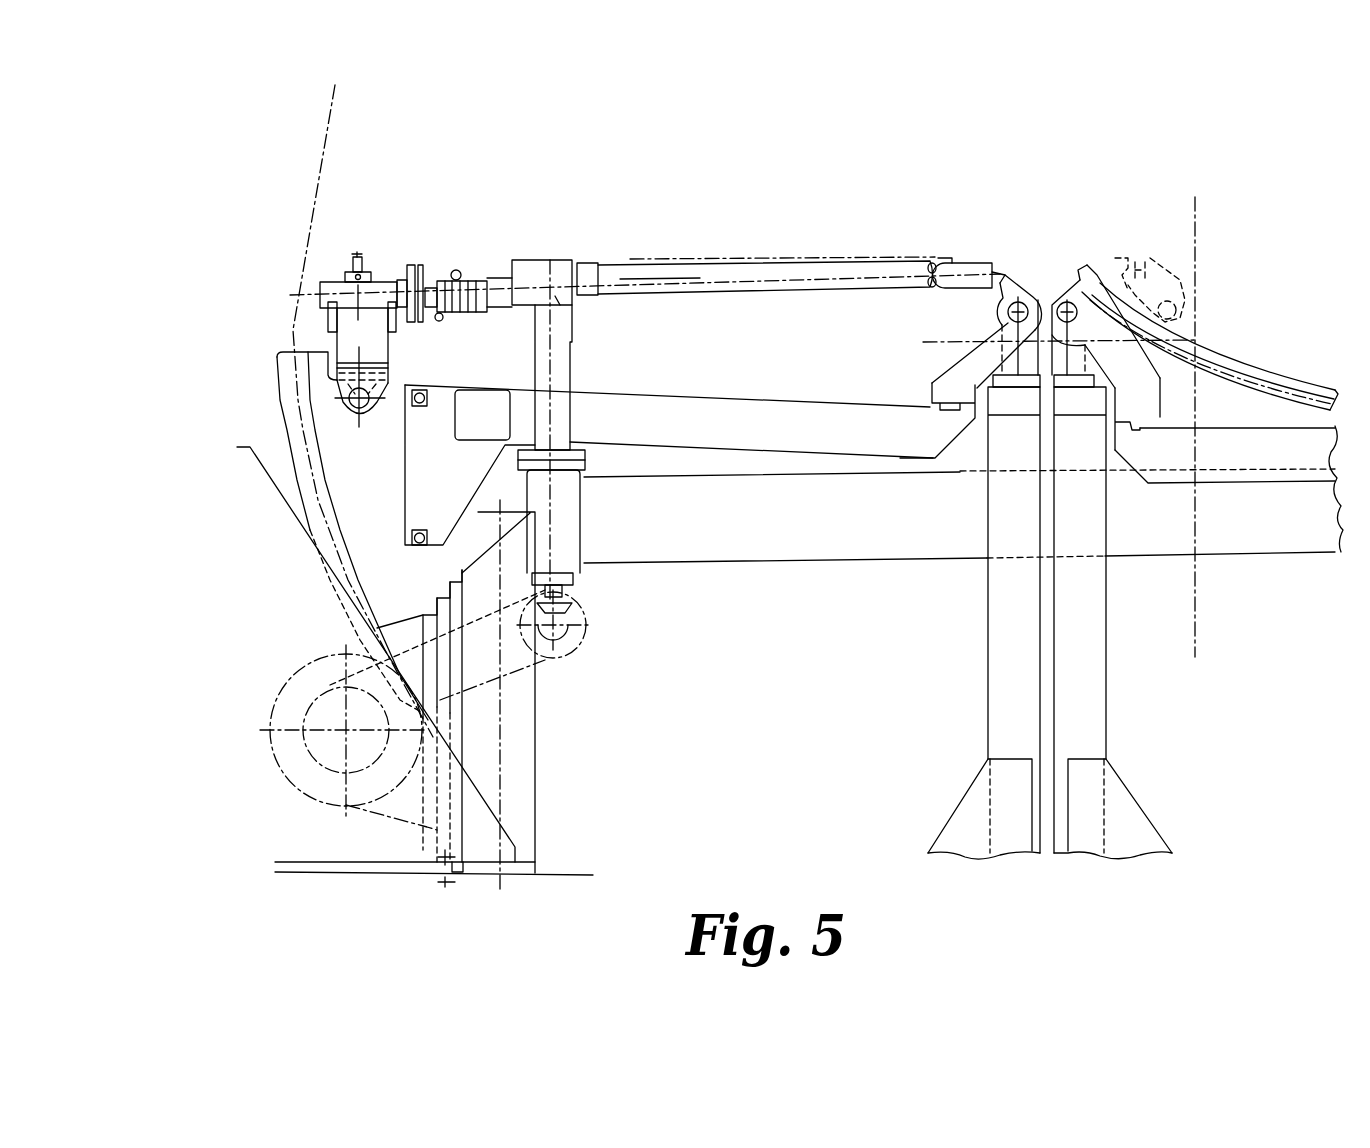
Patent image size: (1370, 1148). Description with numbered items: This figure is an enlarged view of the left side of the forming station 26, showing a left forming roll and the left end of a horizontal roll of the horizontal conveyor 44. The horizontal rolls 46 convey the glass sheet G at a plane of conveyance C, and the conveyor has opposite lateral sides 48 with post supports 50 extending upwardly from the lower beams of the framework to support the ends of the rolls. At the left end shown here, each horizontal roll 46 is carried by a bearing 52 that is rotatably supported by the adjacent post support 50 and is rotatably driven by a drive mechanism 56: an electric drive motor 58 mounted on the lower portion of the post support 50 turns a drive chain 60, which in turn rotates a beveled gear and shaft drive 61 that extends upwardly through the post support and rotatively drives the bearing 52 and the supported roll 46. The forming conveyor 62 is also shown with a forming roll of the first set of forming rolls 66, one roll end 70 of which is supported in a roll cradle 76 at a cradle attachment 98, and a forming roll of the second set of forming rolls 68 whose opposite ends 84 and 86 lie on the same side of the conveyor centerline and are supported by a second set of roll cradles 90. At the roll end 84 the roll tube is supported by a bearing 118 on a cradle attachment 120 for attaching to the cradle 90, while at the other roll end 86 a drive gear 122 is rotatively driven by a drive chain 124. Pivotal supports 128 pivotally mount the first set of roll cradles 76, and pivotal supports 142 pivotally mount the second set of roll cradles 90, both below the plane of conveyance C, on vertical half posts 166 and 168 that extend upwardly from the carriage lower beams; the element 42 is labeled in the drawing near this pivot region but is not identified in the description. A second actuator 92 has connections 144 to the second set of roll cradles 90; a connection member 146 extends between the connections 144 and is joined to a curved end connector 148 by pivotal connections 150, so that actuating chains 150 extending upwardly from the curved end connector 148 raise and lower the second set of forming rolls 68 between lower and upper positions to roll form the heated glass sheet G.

The forming station 26 is at (580, 150).
The rocker arm assembly 42 is at (1153, 197).
The horizontal conveyor 44 is at (873, 258).
The horizontal rolls 46 is at (755, 262).
The lateral sides 48 is at (600, 300).
The post supports 50 is at (530, 257).
The bearing 52 is at (587, 262).
The drive mechanism 56 is at (593, 610).
The electric drive motor 58 is at (300, 658).
The drive chain 60 is at (507, 683).
The beveled gear and shaft drive 61 is at (558, 423).
The forming conveyor 62 is at (335, 273).
The first set of forming rolls 66 is at (1243, 360).
The second set of forming rolls 68 is at (943, 258).
The roll end 70 is at (1098, 272).
The roll cradles 76 is at (1287, 460).
The roll end 84 is at (952, 258).
The roll end 86 is at (502, 272).
The second set of roll cradles 90 is at (797, 430).
The second actuator 92 is at (267, 343).
The cradle attachment 98 is at (1092, 266).
The bearing 118 is at (993, 260).
The cradle attachment 120 is at (1000, 283).
The drive gear 122 is at (407, 270).
The drive chain 124 is at (413, 267).
The pivotal supports 128 is at (1047, 267).
The pivotal supports 142 is at (1000, 332).
The connections 144 is at (313, 317).
The connection member 146 is at (332, 337).
The curved end connectors 148 is at (363, 510).
The pivotal connections 150 is at (318, 150).
The vertical half post 166 is at (1080, 660).
The vertical half post 168 is at (1003, 660).
The plane of conveyance C is at (620, 262).
The glass sheet G is at (785, 262).